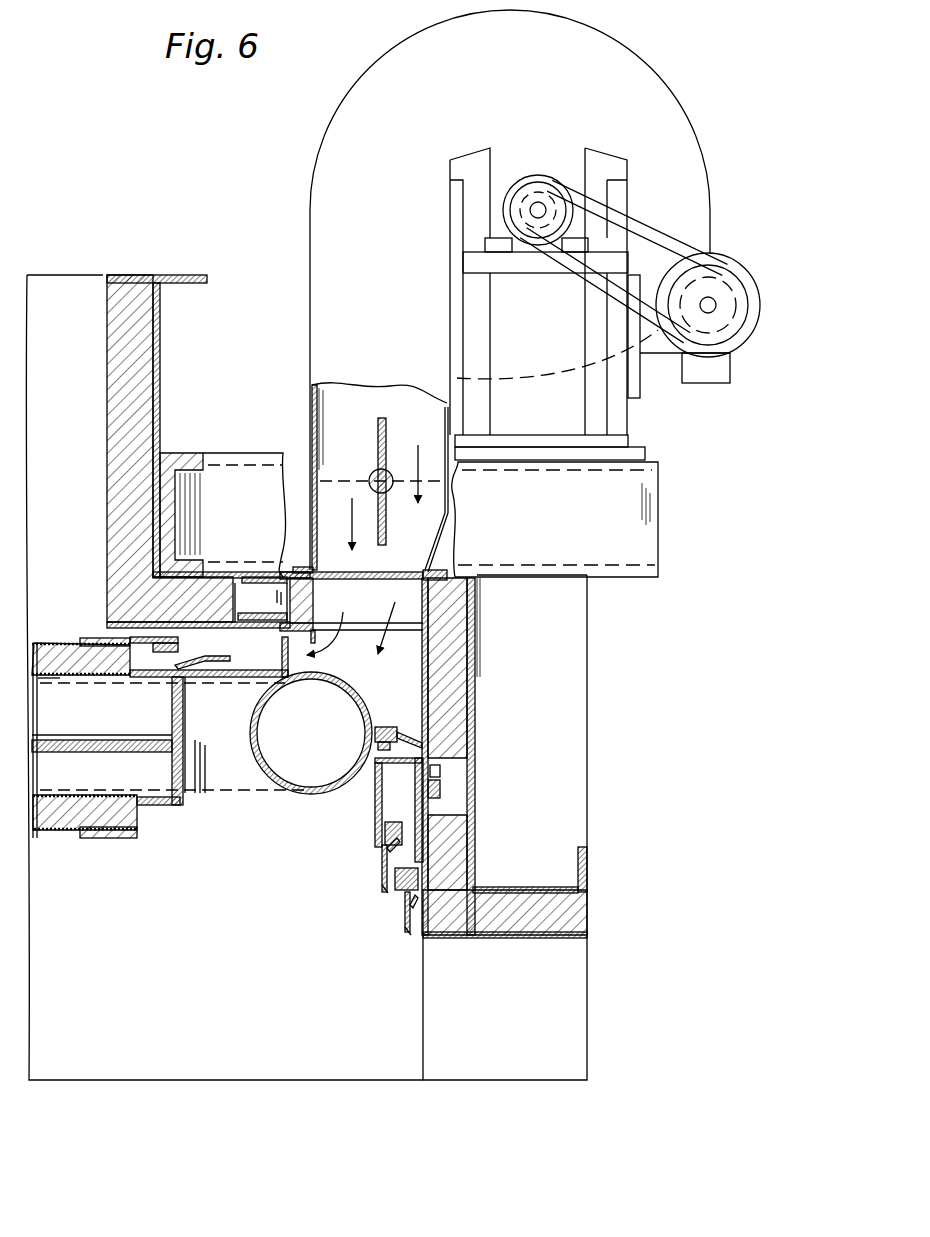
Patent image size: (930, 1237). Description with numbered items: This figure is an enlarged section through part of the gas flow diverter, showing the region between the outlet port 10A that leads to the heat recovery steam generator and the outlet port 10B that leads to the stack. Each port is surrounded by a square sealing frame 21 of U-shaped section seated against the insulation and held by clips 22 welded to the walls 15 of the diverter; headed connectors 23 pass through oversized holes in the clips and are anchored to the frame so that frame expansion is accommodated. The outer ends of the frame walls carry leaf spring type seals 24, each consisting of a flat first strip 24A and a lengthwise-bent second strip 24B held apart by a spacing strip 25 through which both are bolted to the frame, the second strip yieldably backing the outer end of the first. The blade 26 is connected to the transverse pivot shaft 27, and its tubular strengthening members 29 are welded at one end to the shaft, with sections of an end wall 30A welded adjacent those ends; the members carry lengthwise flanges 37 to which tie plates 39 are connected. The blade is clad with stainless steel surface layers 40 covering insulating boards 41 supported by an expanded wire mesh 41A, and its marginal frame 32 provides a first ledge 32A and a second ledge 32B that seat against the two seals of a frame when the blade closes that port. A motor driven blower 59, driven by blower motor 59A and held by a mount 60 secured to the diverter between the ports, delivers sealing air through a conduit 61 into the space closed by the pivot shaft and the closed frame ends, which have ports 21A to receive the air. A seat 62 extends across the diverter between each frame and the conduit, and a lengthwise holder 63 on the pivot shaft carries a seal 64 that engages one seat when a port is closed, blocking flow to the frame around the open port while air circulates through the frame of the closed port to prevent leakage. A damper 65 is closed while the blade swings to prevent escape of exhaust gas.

The diverter outlet port 10A is at (576, 999).
The diverter outlet port 10B is at (85, 271).
The walls 15 is at (476, 662).
The sealing frame 21 is at (240, 685).
The ports 21A is at (290, 655).
The clips 22 is at (258, 597).
The headed connectors 23 is at (242, 577).
The leaf spring type seals 24 is at (192, 642).
The first resilient strip 24A is at (380, 880).
The second resilient strip 24B is at (420, 853).
The spacing strip 25 is at (383, 826).
The blade 26 is at (94, 850).
The pivot shaft 27 is at (268, 784).
The tubular strengthening members 29 is at (143, 781).
The end wall 30A is at (194, 772).
The marginal frame 32 is at (127, 683).
The first ledge 32A is at (103, 638).
The second ledge 32B is at (148, 660).
The lengthwise flanges 37 is at (127, 737).
The tie plates 39 is at (108, 752).
The surface layers 40 is at (33, 645).
The insulating boards 41 is at (48, 645).
The expanded wire mesh 41A is at (72, 680).
The motor driven blower 59 is at (638, 62).
The blower motor 59A is at (727, 254).
The mount 60 is at (655, 495).
The conduit 61 is at (412, 603).
The seat 62 is at (325, 636).
The holder 63 is at (398, 733).
The seal 64 is at (414, 740).
The damper 65 is at (345, 477).